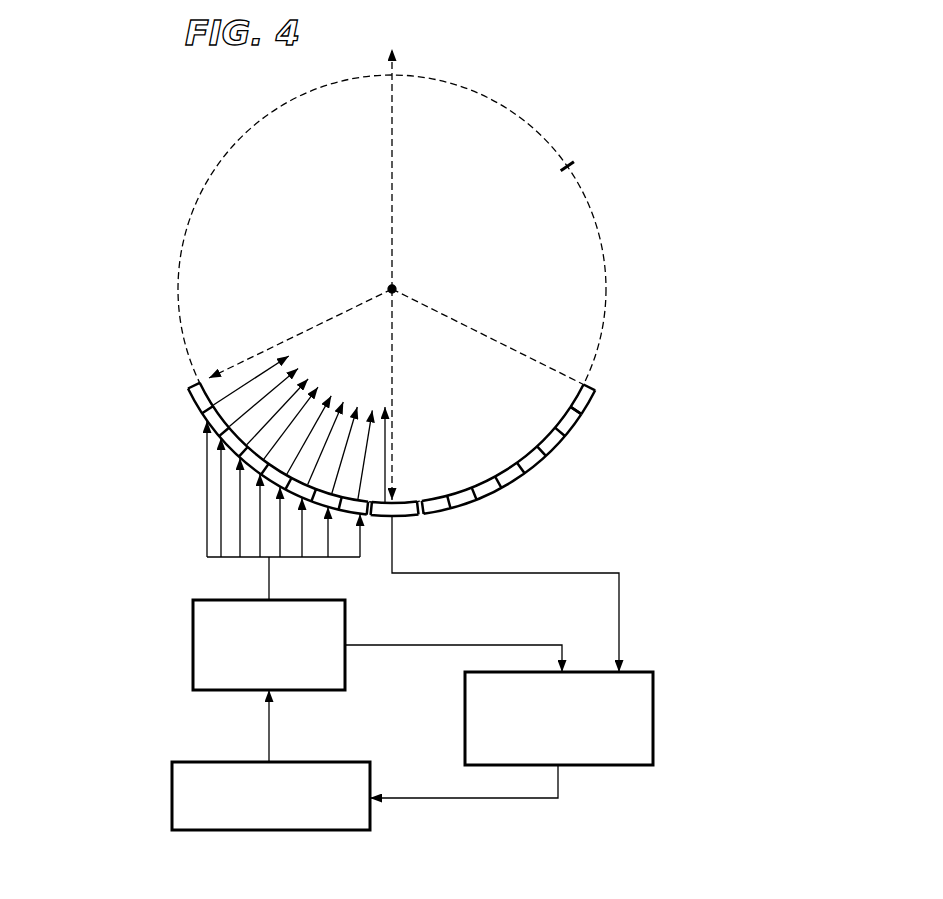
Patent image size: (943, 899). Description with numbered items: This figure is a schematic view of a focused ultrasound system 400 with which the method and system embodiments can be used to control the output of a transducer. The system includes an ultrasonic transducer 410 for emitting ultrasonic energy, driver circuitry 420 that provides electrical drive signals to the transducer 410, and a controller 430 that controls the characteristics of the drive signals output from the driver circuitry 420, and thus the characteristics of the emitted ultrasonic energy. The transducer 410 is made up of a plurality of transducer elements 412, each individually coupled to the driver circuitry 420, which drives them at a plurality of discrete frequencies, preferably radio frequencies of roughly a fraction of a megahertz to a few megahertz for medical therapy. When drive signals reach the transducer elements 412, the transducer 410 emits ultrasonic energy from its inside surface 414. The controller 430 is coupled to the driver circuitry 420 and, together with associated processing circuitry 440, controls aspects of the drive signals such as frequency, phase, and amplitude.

The focused ultrasound system 400 is at (107, 225).
The ultrasonic transducer 410 is at (190, 398).
The transducer elements 412 is at (500, 505).
The inside surface 414 is at (576, 428).
The driver circuitry 420 is at (193, 637).
The controller 430 is at (172, 797).
The processing circuitry 440 is at (653, 708).